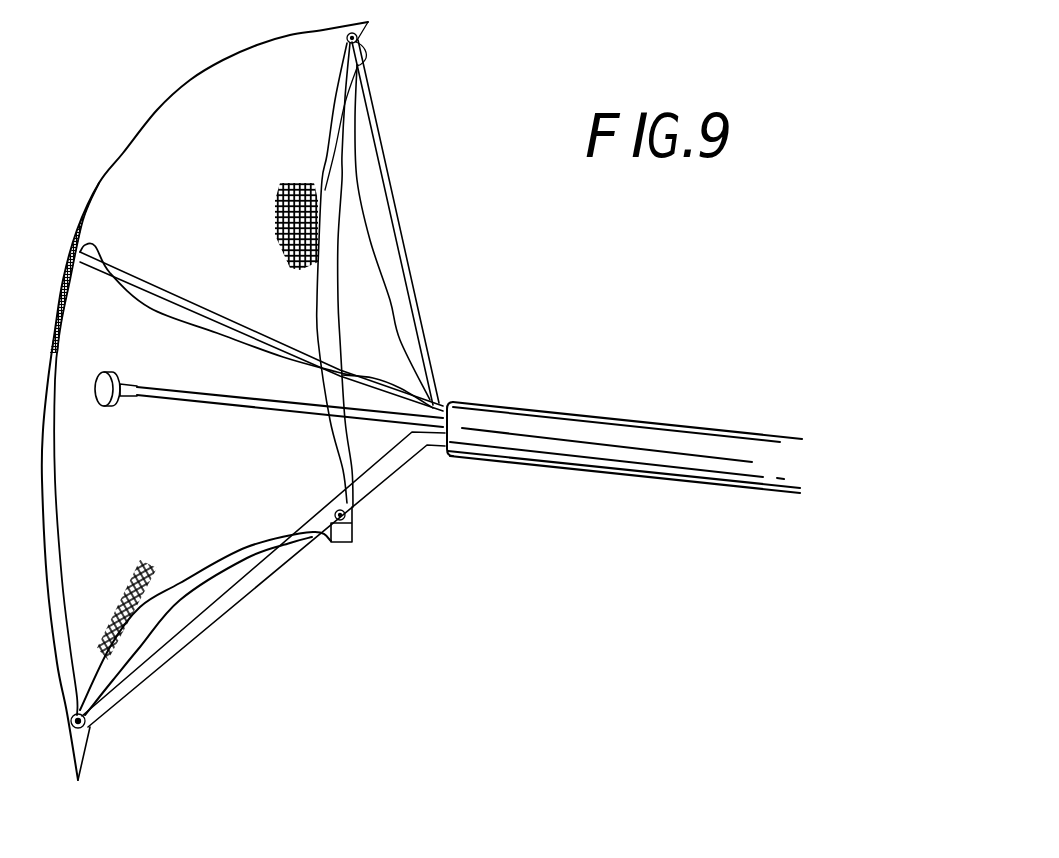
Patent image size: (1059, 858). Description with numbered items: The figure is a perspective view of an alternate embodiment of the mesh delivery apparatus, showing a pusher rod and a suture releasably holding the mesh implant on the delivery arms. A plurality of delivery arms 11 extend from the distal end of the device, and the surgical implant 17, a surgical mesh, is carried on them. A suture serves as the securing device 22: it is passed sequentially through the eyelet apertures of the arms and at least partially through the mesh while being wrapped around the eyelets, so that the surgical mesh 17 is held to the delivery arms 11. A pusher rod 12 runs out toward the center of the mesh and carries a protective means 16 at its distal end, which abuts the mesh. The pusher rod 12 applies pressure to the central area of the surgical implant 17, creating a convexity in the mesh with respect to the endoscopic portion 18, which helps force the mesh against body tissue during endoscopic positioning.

The surgical implant 17 is at (177, 90).
The securing device 22 is at (372, 243).
The delivery arms 11 is at (428, 332).
The endoscopic portion 18 is at (618, 428).
The pusher rod 12 is at (213, 407).
The protective means 16 is at (100, 408).